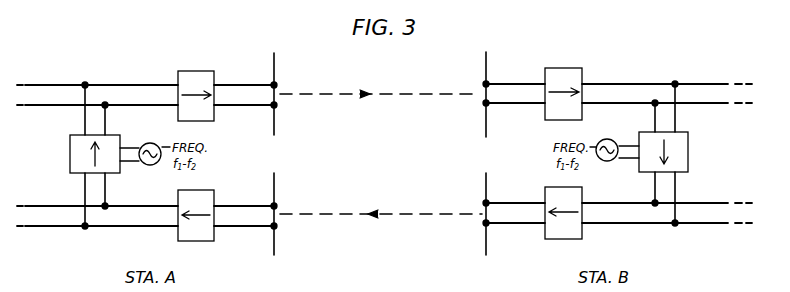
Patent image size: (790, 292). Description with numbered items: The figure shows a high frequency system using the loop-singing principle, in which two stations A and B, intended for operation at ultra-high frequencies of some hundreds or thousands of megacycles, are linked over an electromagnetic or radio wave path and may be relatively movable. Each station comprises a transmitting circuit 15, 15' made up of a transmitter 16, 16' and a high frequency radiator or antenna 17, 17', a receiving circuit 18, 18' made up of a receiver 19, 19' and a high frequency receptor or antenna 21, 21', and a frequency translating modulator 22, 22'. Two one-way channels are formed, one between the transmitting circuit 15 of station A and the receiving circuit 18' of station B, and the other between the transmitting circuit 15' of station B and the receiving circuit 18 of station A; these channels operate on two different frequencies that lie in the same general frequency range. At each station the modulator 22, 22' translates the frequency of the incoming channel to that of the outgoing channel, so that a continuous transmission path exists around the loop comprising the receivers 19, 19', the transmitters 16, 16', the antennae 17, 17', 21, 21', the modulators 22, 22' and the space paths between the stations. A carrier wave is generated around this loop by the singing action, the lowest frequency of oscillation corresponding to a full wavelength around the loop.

The transmitting circuit 15 is at (145, 81).
The transmitter 16 is at (209, 85).
The high frequency radiator or antenna 17 is at (288, 94).
The receiving circuit 18 is at (145, 226).
The receiver 19 is at (201, 228).
The high frequency receptor or antenna 21 is at (288, 214).
The frequency translating modulator 22 is at (77, 155).
The transmitting circuit 15' is at (619, 224).
The transmitter 16' is at (561, 226).
The high frequency radiator or antenna 17' is at (472, 214).
The receiving circuit 18' is at (619, 77).
The receiver 19' is at (559, 83).
The high frequency receptor or antenna 21' is at (470, 94).
The frequency translating modulator 22' is at (683, 153).